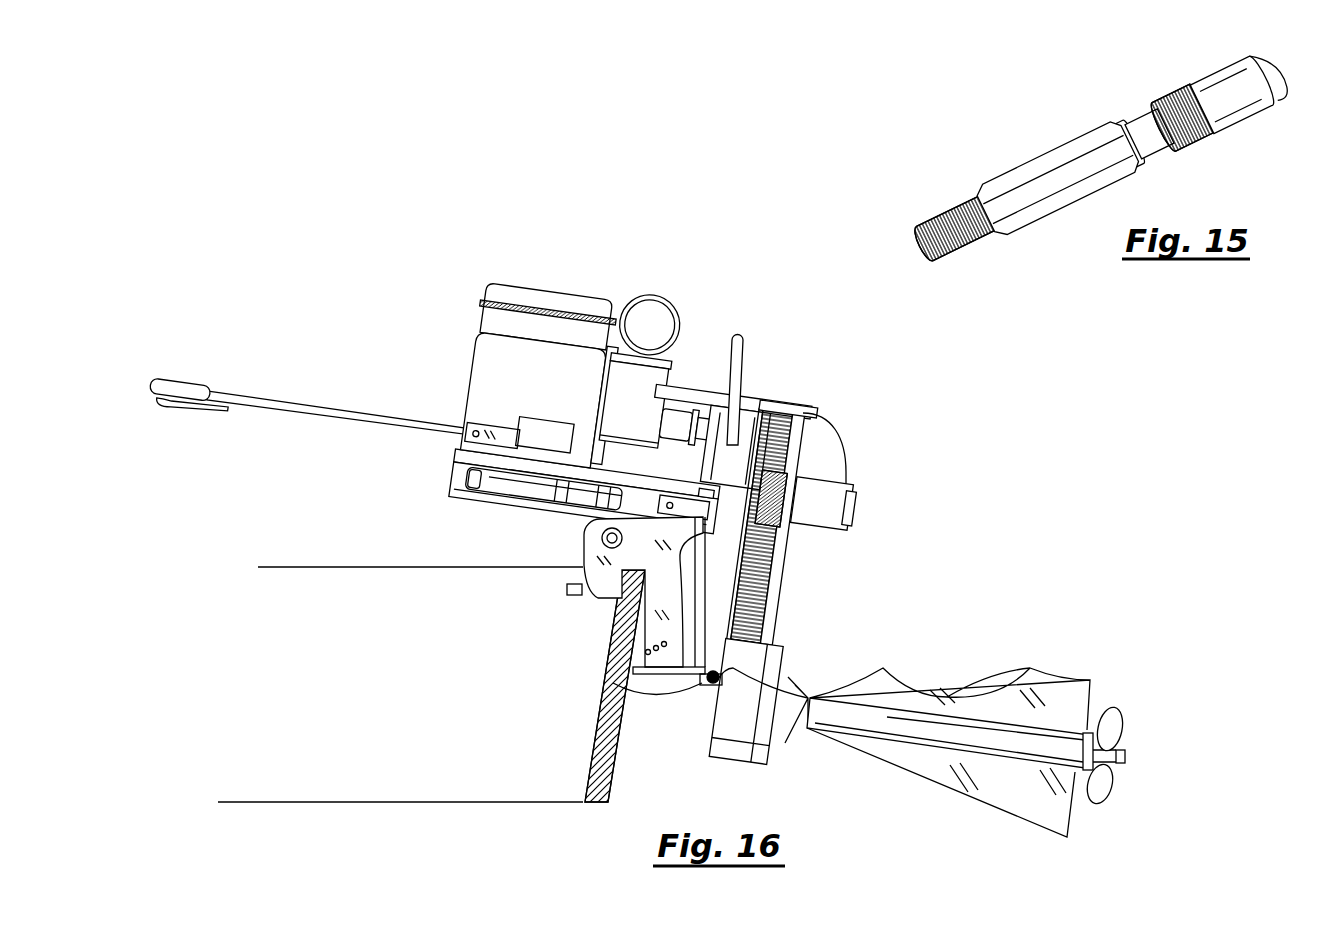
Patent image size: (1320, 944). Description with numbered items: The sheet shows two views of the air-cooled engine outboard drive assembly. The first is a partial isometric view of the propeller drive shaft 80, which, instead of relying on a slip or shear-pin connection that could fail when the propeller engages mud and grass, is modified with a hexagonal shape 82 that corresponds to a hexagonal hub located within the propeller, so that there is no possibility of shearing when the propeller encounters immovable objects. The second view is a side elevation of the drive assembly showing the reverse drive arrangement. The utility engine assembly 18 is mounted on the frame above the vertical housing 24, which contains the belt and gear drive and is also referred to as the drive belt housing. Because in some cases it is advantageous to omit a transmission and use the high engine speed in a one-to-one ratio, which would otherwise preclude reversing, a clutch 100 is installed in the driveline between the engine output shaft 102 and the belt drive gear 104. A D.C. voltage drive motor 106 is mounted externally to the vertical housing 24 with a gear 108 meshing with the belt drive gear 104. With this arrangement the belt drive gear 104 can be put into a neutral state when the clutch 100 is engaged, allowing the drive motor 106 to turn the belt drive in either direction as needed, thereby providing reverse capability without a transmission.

In FIG. 16, the utility engine assembly 18 is at (514, 398).
In FIG. 16, the vertical housing 24 is at (780, 634).
In FIG. 15, the shaft 80 is at (1236, 97).
In FIG. 15, the hexagonal shape 82 is at (1035, 172).
In FIG. 16, the clutch 100 is at (742, 460).
In FIG. 16, the engine output shaft 102 is at (657, 403).
In FIG. 16, the belt drive gear 104 is at (803, 443).
In FIG. 16, the D.C. voltage drive motor 106 is at (830, 507).
In FIG. 16, the gear 108 is at (777, 532).